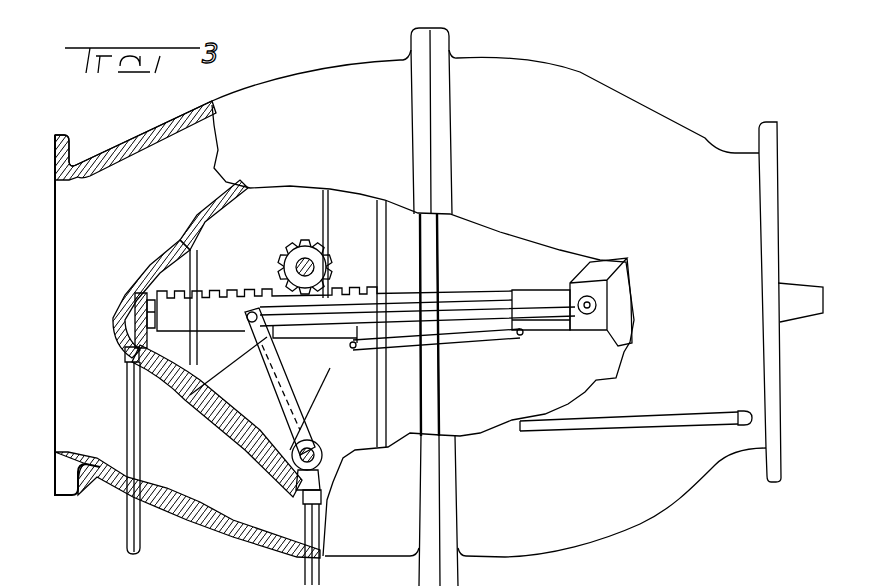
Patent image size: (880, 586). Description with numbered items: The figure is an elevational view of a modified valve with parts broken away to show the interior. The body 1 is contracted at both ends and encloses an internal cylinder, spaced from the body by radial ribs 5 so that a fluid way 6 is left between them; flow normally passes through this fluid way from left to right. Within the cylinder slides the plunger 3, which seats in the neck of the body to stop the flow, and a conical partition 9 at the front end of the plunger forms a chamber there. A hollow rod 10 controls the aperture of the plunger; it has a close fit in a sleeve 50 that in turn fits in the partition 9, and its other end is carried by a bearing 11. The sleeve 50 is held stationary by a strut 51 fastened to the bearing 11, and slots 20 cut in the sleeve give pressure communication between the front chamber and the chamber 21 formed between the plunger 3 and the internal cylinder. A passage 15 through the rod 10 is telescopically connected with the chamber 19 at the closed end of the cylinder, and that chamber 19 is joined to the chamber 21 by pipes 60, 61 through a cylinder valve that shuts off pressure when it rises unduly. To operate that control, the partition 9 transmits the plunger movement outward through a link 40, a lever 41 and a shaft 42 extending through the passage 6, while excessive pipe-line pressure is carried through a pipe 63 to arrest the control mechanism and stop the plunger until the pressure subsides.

The body 1 is at (357, 73).
The plunger 3 is at (347, 210).
The radial ribs 5 is at (253, 517).
The fluid way 6 is at (158, 139).
The conical partition 9 is at (599, 268).
The rod 10 is at (510, 273).
The bearing 11 is at (322, 378).
The passage 15 is at (145, 311).
The chamber 19 is at (136, 300).
The slots 20 is at (568, 273).
The chamber 21 is at (228, 228).
The link 40 is at (433, 310).
The lever 41 is at (272, 381).
The shaft 42 is at (318, 465).
The sleeve 50 is at (540, 345).
The strut 51 is at (480, 336).
The pipe 60 is at (129, 423).
The pipe 61 is at (320, 578).
The pipe 63 is at (680, 400).